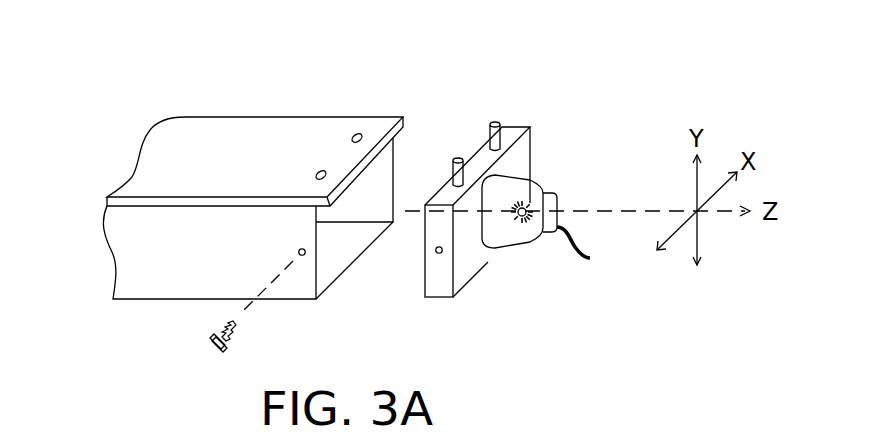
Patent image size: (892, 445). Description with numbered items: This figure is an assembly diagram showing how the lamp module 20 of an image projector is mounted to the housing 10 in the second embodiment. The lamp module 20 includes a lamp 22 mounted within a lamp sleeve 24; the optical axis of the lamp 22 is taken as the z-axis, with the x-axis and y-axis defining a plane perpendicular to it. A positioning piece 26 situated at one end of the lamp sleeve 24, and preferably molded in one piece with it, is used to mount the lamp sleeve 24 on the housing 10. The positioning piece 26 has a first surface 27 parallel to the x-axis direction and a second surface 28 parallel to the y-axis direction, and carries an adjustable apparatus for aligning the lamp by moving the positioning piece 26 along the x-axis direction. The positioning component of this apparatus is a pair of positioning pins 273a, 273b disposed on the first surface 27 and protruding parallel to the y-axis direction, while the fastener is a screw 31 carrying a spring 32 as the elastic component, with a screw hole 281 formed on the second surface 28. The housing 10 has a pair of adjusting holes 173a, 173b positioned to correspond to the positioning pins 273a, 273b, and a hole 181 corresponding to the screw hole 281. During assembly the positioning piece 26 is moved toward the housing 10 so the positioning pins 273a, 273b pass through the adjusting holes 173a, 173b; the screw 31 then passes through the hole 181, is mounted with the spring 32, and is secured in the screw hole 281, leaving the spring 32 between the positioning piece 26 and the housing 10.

The housing 10 is at (135, 150).
The adjusting hole 173a is at (357, 133).
The adjusting hole 173b is at (318, 168).
The hole 181 is at (302, 257).
The screw 31 is at (213, 343).
The spring 32 is at (219, 327).
The lamp module 20 is at (577, 128).
The lamp 22 is at (523, 203).
The lamp sleeve 24 is at (520, 247).
The positioning piece 26 is at (478, 272).
The first surface 27 is at (513, 127).
The positioning pin 273a is at (497, 120).
The positioning pin 273b is at (458, 157).
The second surface 28 is at (445, 298).
The screw hole 281 is at (435, 252).